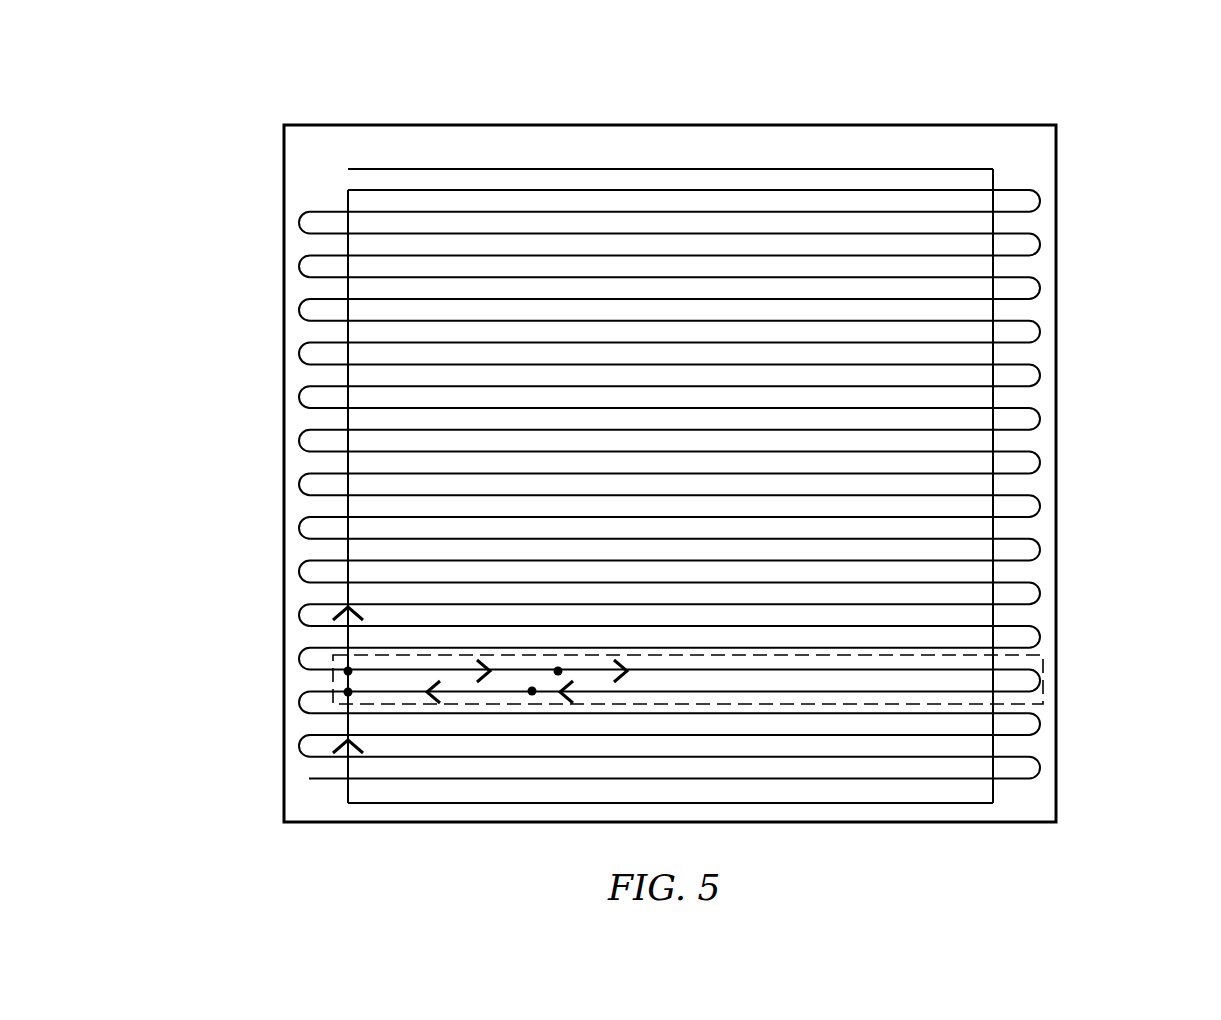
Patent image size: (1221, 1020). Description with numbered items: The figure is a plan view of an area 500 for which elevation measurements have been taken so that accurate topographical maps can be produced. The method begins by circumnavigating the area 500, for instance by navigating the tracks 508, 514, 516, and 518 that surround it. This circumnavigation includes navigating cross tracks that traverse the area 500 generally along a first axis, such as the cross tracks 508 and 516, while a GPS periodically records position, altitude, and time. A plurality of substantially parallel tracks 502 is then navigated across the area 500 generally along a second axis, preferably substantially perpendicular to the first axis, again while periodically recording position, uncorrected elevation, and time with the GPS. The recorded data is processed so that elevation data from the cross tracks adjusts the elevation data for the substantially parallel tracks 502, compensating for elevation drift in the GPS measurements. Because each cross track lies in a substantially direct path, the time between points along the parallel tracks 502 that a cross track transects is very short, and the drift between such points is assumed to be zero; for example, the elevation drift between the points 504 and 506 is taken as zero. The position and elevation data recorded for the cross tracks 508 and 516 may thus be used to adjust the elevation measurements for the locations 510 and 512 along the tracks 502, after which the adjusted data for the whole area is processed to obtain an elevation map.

The area 500 is at (975, 118).
The substantially parallel tracks 502 is at (1052, 688).
The point 504 is at (346, 670).
The point 506 is at (346, 693).
The cross track 508 is at (330, 680).
The location 510 is at (556, 673).
The location 512 is at (533, 694).
The track 514 is at (722, 160).
The cross track 516 is at (1003, 398).
The track 518 is at (814, 812).